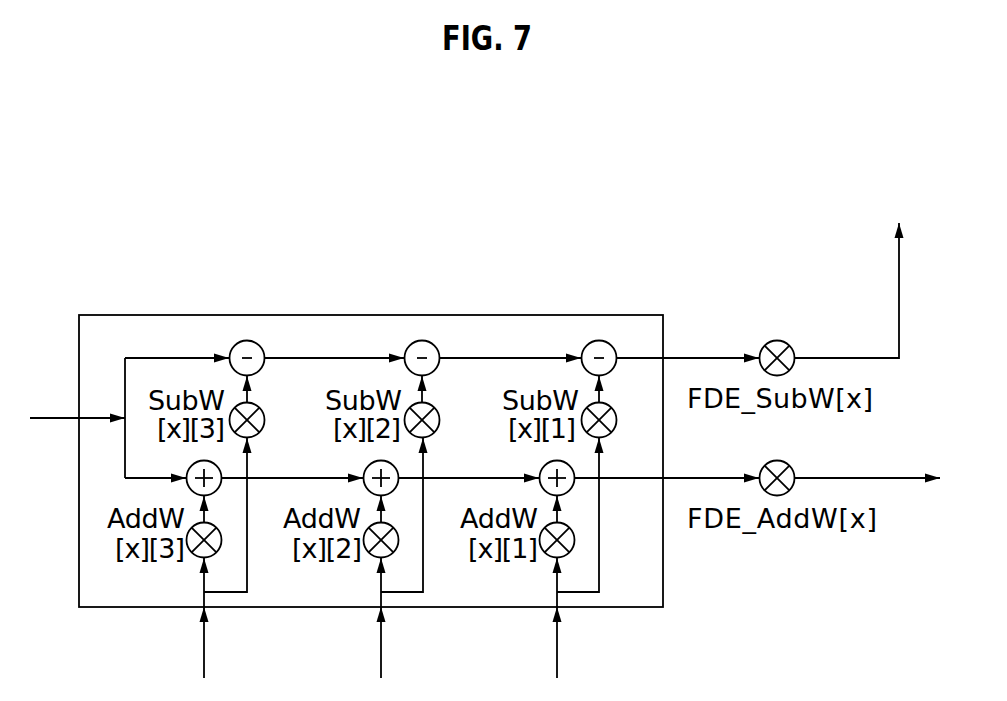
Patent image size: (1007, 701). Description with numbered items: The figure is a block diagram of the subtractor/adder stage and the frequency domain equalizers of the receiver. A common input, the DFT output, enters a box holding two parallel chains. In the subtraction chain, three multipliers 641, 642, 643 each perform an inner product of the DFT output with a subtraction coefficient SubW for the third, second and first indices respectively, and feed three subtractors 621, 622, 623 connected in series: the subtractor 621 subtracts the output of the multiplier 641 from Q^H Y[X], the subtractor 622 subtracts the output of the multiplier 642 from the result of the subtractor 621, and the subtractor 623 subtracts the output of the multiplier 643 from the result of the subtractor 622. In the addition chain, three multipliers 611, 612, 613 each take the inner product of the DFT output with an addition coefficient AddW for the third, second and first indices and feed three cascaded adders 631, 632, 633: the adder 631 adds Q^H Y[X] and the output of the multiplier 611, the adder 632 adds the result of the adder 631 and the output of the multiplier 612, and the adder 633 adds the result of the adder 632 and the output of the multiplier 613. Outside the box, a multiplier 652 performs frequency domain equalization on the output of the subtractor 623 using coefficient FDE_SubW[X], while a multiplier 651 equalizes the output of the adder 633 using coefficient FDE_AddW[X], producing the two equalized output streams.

The multiplier 611 is at (222, 540).
The multiplier 612 is at (399, 540).
The multiplier 613 is at (575, 540).
The subtractor 621 is at (243, 340).
The subtractor 622 is at (418, 340).
The subtractor 623 is at (595, 340).
The adder 631 is at (218, 490).
The adder 632 is at (398, 490).
The adder 633 is at (574, 490).
The multiplier 641 is at (265, 418).
The multiplier 642 is at (440, 418).
The multiplier 643 is at (617, 418).
The multiplier 651 is at (770, 465).
The multiplier 652 is at (770, 343).